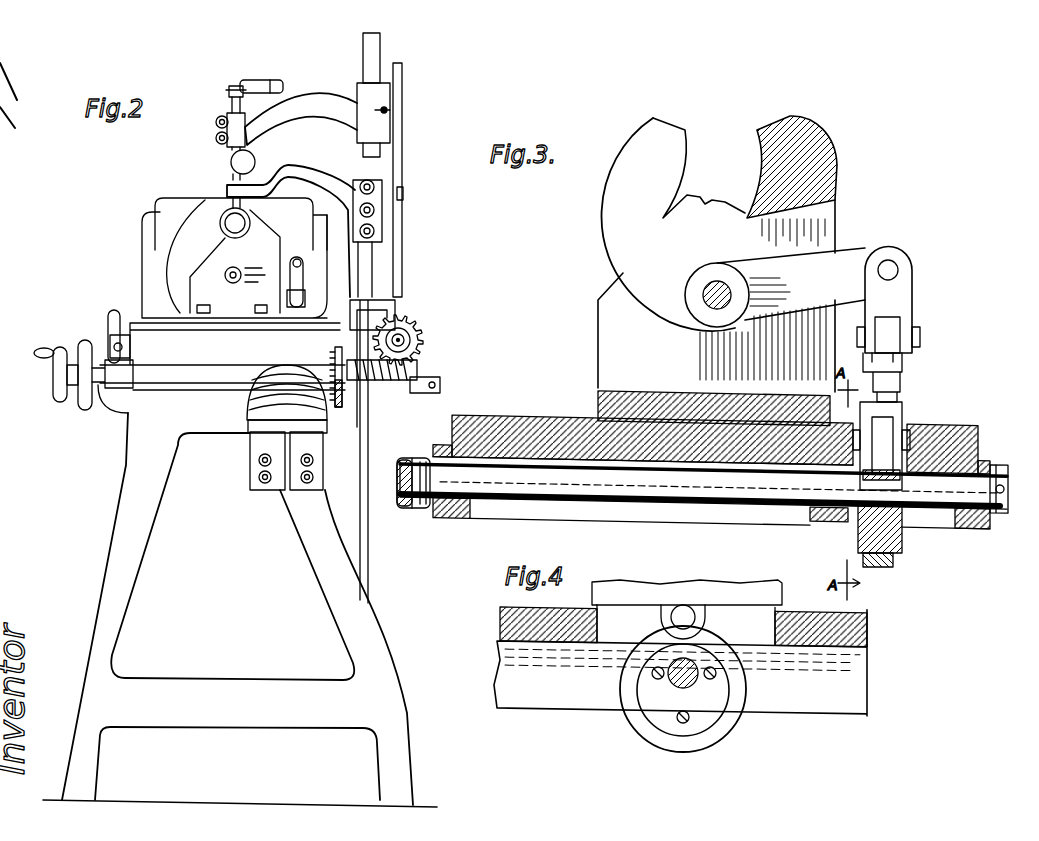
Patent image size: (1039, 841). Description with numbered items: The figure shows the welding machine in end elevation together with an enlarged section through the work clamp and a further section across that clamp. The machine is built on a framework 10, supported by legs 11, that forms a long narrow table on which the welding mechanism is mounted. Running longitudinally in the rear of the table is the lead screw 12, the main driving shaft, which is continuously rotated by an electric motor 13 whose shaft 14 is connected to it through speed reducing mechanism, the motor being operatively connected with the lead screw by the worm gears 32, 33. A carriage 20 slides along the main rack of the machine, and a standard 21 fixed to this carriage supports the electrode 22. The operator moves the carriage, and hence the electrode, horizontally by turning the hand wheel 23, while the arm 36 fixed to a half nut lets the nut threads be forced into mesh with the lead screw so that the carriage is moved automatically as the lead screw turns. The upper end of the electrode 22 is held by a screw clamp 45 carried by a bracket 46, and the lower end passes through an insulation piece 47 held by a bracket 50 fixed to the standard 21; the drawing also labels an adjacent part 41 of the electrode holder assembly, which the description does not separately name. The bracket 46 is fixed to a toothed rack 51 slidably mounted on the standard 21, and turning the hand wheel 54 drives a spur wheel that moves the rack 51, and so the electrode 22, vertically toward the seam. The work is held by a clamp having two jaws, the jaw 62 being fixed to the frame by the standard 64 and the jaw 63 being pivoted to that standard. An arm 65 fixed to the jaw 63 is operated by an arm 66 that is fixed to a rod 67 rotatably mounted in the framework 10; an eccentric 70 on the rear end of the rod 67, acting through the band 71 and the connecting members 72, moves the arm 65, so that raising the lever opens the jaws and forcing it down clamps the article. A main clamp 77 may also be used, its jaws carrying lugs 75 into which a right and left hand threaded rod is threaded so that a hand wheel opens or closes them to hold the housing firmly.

In FIG. 2, the framework 10 is at (218, 369).
In FIG. 3, the framework 10 is at (500, 415).
In FIG. 2, the legs 11 is at (128, 590).
In FIG. 2, the lead screw 12 is at (407, 335).
In FIG. 2, the electric motor 13 is at (250, 400).
In FIG. 2, the motor shaft 14 is at (250, 440).
In FIG. 2, the carriage 20 is at (400, 333).
In FIG. 2, the standard 21 is at (373, 247).
In FIG. 2, the electrode 22 is at (230, 192).
In FIG. 2, the hand wheel 23 is at (60, 405).
In FIG. 2, the worm gear 32 is at (330, 380).
In FIG. 2, the worm gear 33 is at (410, 367).
In FIG. 2, the arm 36 is at (269, 74).
In FIG. 2, the tool post 41 is at (265, 222).
In FIG. 2, the screw clamp 45 is at (216, 140).
In FIG. 2, the bracket 46 is at (317, 103).
In FIG. 2, the insulation piece 47 is at (230, 170).
In FIG. 2, the bracket 50 is at (295, 165).
In FIG. 2, the toothed rack 51 is at (370, 425).
In FIG. 2, the hand wheel 54 is at (88, 410).
In FIG. 3, the jaw 62 is at (825, 212).
In FIG. 3, the jaw 63 is at (604, 224).
In FIG. 3, the standard 64 is at (612, 361).
In FIG. 3, the arm 65 is at (802, 307).
In FIG. 3, the arm 66 is at (398, 510).
In FIG. 3, the rod 67 is at (595, 507).
In FIG. 4, the rod 67 is at (680, 659).
In FIG. 3, the eccentric 70 is at (902, 540).
In FIG. 4, the eccentric 70 is at (710, 707).
In FIG. 3, the band 71 is at (885, 567).
In FIG. 4, the band 71 is at (710, 737).
In FIG. 3, the connecting members 72 is at (893, 407).
In FIG. 4, the connecting members 72 is at (695, 612).
In FIG. 2, the lugs 75 is at (115, 310).
In FIG. 2, the main clamp 77 is at (148, 278).